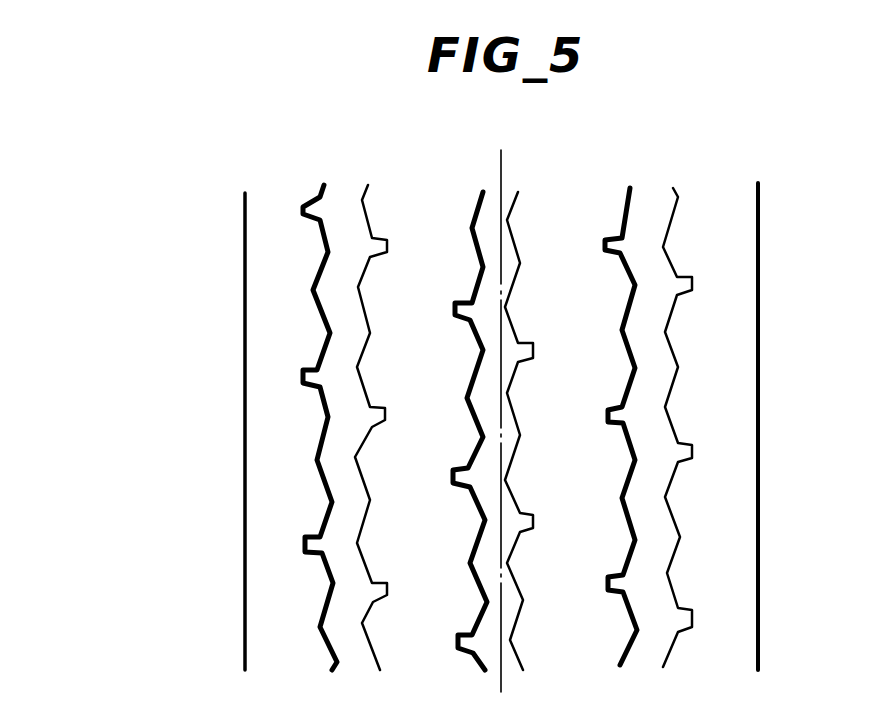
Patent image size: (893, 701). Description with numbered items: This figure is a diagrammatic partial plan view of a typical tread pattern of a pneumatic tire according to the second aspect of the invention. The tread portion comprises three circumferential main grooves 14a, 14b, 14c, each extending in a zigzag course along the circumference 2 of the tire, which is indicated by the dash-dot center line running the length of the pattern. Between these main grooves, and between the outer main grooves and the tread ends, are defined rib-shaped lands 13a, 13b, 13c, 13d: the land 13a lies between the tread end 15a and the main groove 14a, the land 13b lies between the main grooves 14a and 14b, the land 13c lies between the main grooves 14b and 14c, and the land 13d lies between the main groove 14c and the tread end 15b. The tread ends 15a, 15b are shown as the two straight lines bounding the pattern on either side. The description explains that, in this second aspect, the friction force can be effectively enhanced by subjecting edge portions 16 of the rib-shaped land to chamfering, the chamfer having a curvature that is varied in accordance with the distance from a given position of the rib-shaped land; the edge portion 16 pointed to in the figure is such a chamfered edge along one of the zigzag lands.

The circumference 2 is at (503, 172).
The rib-shaped land 13a is at (273, 213).
The rib-shaped land 13b is at (427, 203).
The rib-shaped land 13c is at (580, 212).
The rib-shaped land 13d is at (717, 212).
The circumferential main groove 14a is at (343, 203).
The circumferential main groove 14b is at (510, 253).
The circumferential main groove 14c is at (652, 212).
The tread end 15a is at (243, 275).
The tread end 15b is at (758, 268).
The edge portion 16 is at (630, 352).